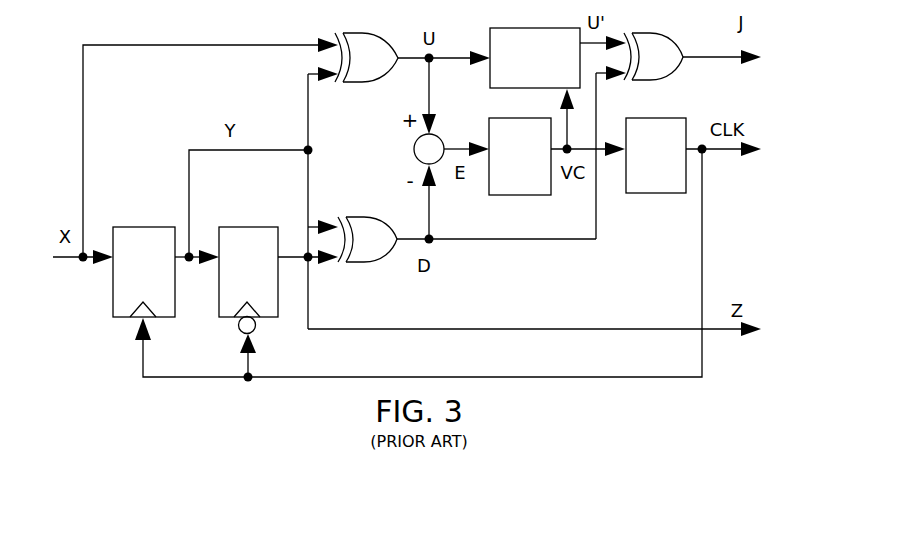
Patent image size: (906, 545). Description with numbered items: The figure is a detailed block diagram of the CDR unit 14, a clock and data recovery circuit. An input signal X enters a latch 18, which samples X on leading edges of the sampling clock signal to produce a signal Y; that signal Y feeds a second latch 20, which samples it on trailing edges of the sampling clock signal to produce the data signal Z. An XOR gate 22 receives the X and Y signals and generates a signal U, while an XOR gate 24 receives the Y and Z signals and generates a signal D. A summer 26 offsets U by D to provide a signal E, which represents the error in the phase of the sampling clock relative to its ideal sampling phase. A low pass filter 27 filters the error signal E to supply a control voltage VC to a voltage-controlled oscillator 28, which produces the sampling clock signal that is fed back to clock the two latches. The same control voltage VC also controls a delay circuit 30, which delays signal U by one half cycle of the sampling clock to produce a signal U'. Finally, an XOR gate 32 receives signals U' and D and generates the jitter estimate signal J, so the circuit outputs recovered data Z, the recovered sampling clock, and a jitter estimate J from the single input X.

The CDR unit 14 is at (184, 404).
The latch 18 is at (144, 272).
The latch 20 is at (248, 280).
The XOR gate 22 is at (366, 57).
The XOR gate 24 is at (367, 239).
The summer 26 is at (440, 136).
The low pass filter 27 is at (520, 156).
The voltage-controlled oscillator 28 is at (656, 155).
The delay circuit 30 is at (535, 58).
The XOR gate 32 is at (653, 56).